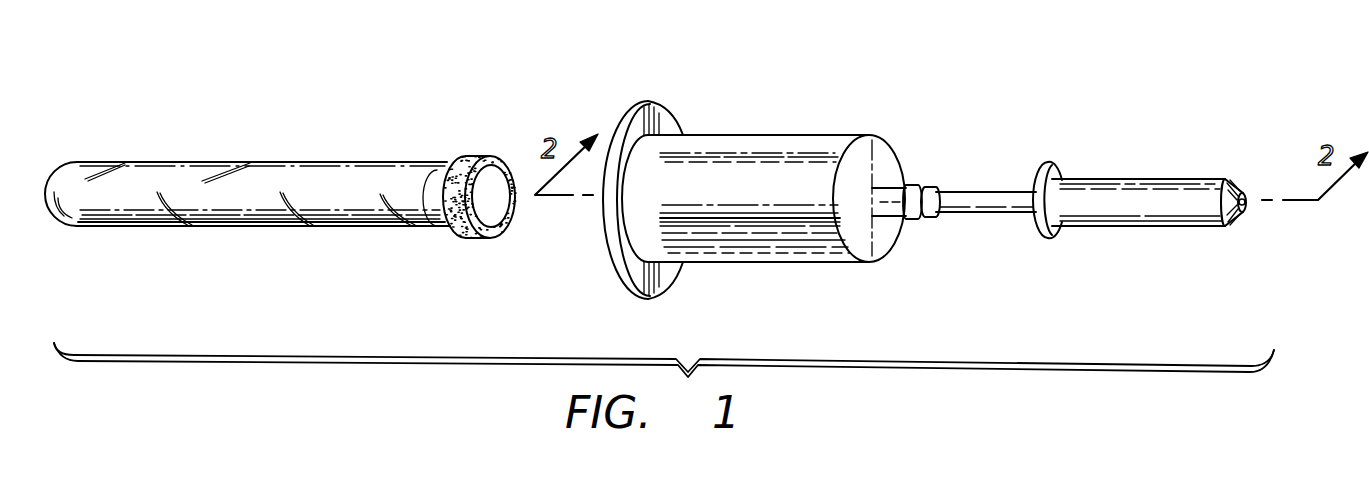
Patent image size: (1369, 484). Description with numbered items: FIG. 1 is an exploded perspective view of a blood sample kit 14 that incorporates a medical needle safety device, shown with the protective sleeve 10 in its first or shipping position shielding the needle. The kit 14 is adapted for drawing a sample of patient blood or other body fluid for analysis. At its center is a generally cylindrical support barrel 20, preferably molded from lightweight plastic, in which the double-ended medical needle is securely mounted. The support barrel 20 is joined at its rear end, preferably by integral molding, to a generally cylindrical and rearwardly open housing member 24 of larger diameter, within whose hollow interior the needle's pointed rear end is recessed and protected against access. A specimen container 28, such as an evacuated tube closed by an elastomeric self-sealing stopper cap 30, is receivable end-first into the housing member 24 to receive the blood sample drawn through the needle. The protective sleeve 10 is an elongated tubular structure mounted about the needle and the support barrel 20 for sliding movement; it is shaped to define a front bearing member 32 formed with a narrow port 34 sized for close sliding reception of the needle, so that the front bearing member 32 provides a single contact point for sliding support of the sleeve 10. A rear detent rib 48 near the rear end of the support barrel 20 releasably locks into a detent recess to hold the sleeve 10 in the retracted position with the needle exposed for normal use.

The protective sleeve 10 is at (1118, 192).
The blood sample kit 14 is at (597, 282).
The support barrel 20 is at (968, 216).
The housing member 24 is at (764, 142).
The specimen container 28 is at (285, 178).
The stopper cap 30 is at (466, 156).
The front bearing member 32 is at (1240, 225).
The port 34 is at (1244, 199).
The rear detent rib 48 is at (933, 188).